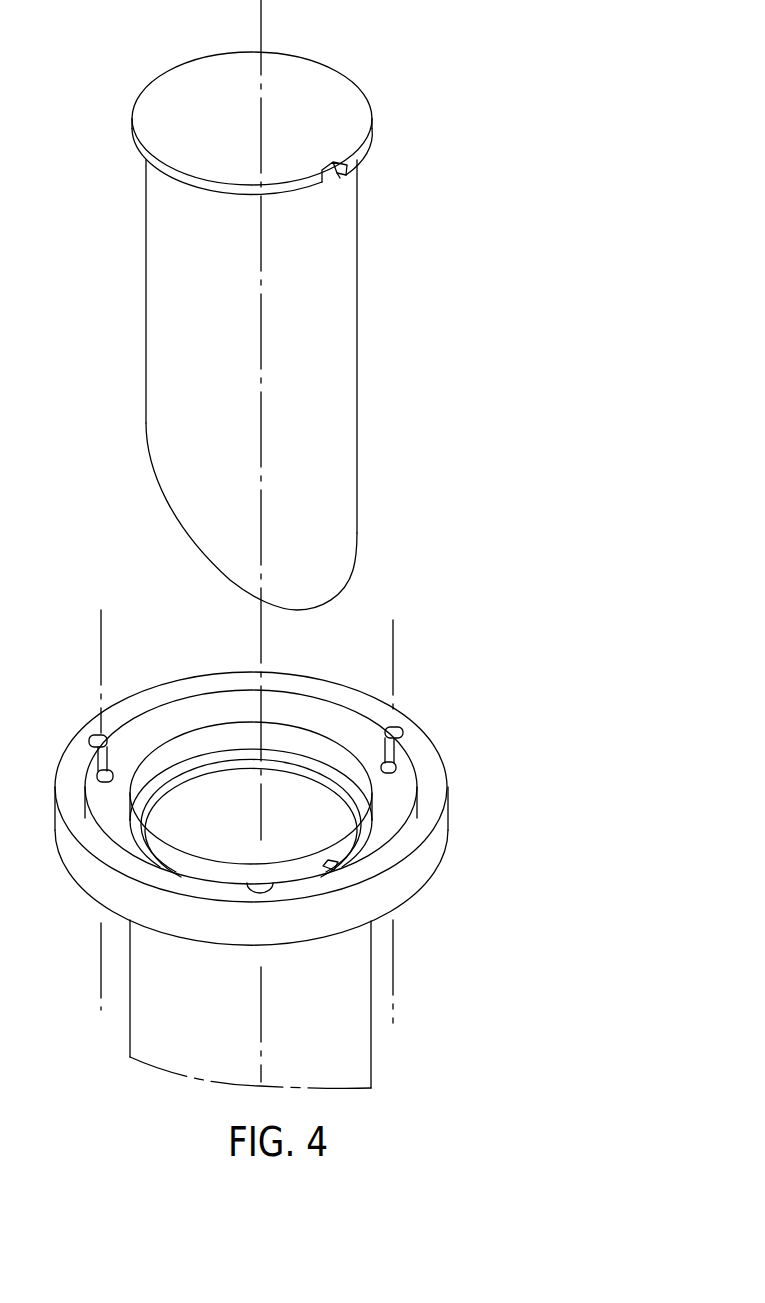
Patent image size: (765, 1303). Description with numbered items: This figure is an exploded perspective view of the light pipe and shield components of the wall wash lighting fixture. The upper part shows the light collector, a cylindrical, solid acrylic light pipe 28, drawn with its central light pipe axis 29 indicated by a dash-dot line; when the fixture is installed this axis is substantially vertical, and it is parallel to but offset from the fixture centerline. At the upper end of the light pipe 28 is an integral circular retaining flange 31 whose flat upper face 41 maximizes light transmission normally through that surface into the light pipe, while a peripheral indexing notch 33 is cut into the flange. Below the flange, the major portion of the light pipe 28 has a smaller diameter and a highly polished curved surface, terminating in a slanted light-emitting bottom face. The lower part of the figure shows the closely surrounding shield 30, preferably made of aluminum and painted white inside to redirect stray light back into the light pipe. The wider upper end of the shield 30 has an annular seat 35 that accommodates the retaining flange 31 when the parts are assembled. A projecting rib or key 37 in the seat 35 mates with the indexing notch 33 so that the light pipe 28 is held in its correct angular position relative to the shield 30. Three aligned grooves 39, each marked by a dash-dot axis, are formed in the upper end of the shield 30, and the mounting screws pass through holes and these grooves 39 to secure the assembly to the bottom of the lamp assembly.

The light pipe 28 is at (155, 290).
The light pipe axis 29 is at (266, 2).
The shield 30 is at (135, 1043).
The retaining flange 31 is at (357, 155).
The indexing notch 33 is at (338, 177).
The annular seat 35 is at (163, 788).
The projecting rib or key 37 is at (331, 861).
The aligned grooves 39 is at (96, 740).
The flat upper face 41 is at (345, 88).